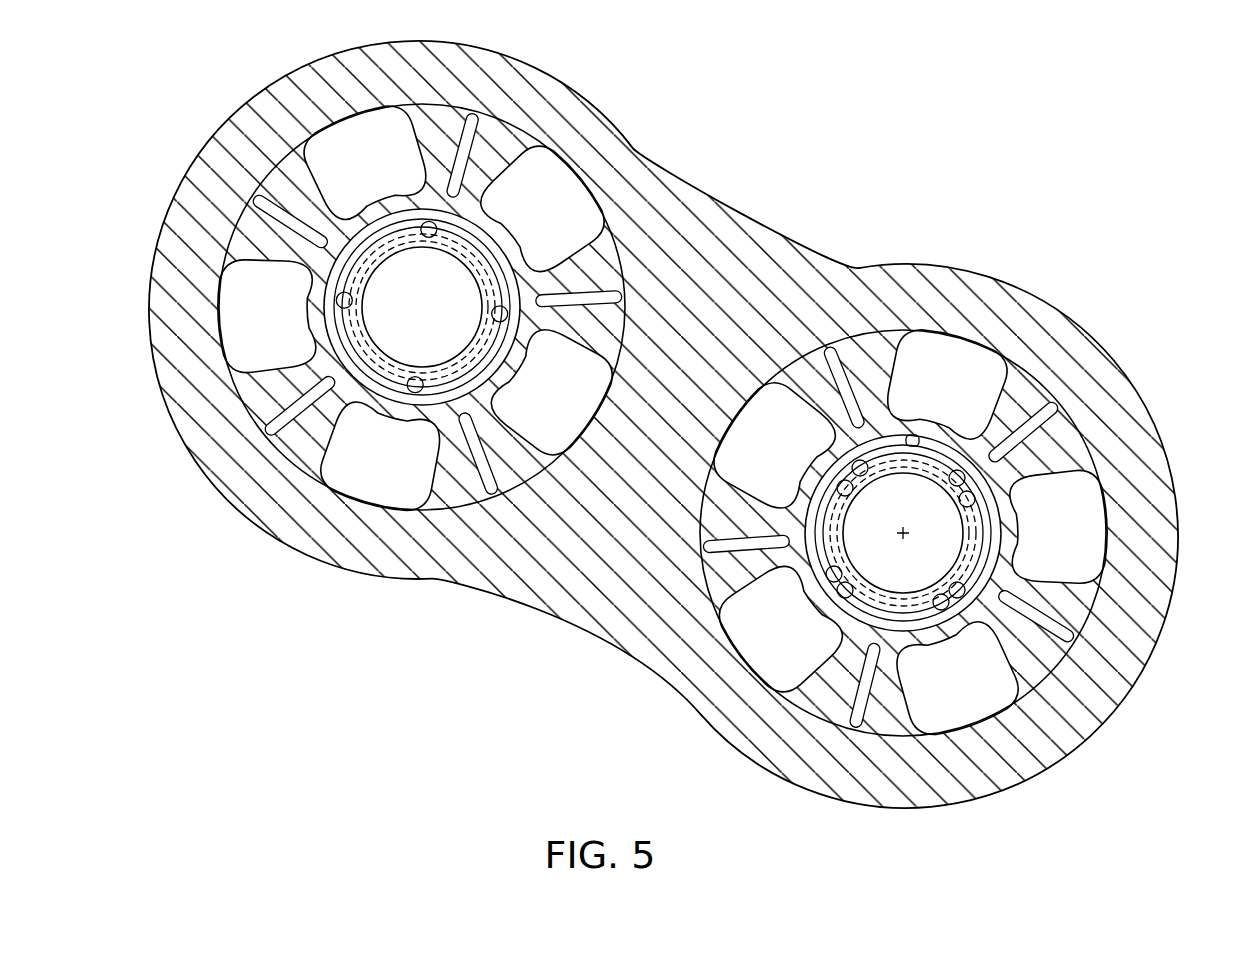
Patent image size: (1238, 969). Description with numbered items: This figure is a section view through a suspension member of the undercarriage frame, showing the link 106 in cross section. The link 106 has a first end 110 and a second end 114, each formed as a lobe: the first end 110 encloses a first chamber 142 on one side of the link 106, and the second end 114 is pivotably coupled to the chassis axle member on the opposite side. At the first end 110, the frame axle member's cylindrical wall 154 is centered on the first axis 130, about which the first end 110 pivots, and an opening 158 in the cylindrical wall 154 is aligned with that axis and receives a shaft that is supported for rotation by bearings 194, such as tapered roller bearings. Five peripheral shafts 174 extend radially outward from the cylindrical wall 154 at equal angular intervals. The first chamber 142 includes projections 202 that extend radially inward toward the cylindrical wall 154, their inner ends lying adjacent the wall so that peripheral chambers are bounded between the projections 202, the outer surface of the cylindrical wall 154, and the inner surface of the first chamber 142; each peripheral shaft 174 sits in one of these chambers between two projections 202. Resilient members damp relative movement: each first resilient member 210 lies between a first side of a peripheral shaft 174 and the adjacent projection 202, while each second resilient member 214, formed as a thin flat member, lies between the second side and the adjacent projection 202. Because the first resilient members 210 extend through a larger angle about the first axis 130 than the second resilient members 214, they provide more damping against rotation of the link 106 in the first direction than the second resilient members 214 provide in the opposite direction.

The link 106 is at (762, 247).
The first end 110 is at (1167, 533).
The second end 114 is at (262, 105).
The first axis 130 is at (901, 534).
The first chamber 142 is at (1004, 371).
The cylindrical wall 154 is at (815, 476).
The opening 158 is at (914, 440).
The peripheral shafts 174 is at (808, 695).
The bearings 194 is at (981, 508).
The projections 202 is at (733, 585).
The first resilient members 210 is at (750, 644).
The second resilient members 214 is at (726, 546).